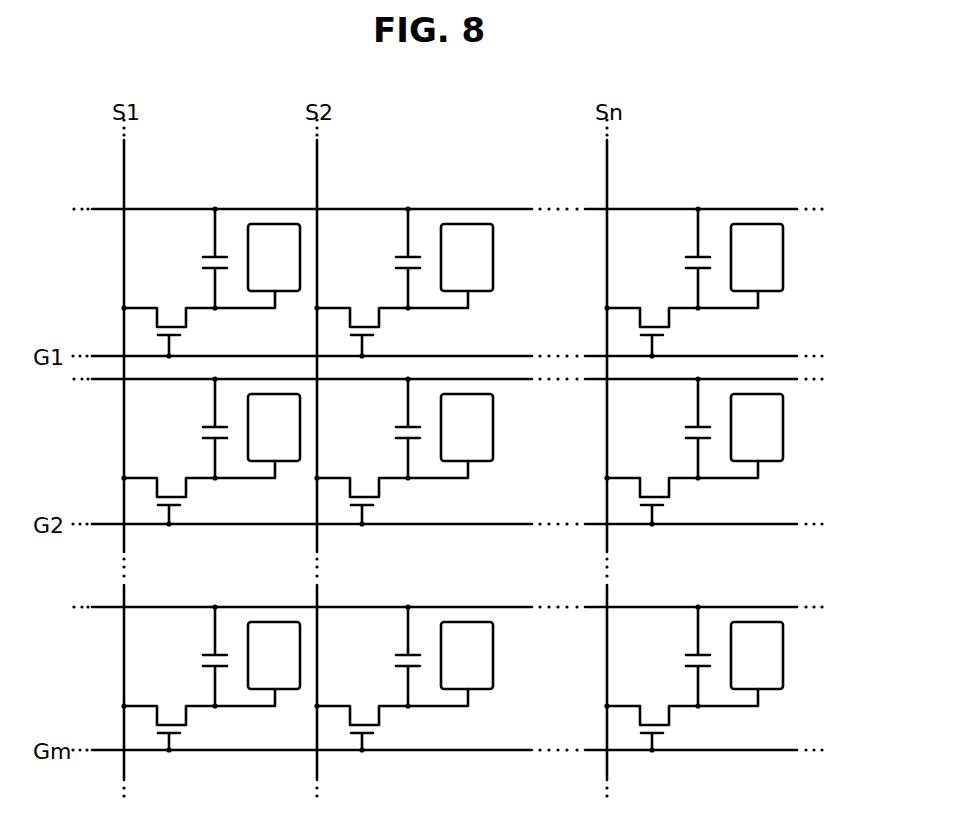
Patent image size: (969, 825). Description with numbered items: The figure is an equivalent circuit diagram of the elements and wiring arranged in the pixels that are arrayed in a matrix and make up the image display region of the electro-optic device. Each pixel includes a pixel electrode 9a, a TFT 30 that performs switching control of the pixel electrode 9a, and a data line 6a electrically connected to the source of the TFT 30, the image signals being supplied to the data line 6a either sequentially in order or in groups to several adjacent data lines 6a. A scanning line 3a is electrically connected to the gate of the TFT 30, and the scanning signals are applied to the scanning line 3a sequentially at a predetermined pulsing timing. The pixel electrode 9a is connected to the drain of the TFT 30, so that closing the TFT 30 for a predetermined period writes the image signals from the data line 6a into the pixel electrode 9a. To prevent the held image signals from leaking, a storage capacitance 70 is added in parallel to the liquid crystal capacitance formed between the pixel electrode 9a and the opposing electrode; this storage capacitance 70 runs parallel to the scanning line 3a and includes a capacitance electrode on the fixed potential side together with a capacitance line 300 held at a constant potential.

The data line 6a is at (124, 160).
The scanning line 3a is at (797, 356).
The capacitance line 300 is at (797, 209).
The storage capacitance 70 is at (199, 265).
The TFT 30 is at (187, 327).
The pixel electrode 9a is at (288, 291).